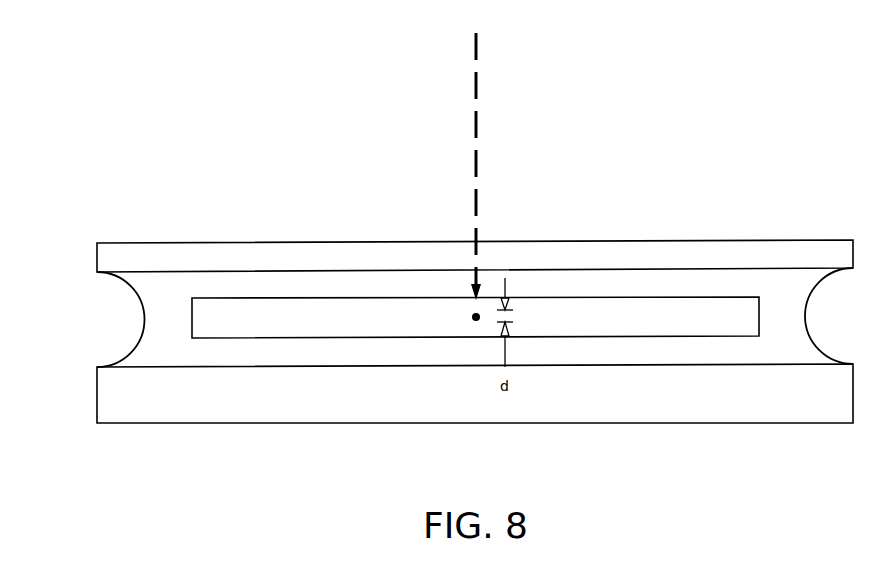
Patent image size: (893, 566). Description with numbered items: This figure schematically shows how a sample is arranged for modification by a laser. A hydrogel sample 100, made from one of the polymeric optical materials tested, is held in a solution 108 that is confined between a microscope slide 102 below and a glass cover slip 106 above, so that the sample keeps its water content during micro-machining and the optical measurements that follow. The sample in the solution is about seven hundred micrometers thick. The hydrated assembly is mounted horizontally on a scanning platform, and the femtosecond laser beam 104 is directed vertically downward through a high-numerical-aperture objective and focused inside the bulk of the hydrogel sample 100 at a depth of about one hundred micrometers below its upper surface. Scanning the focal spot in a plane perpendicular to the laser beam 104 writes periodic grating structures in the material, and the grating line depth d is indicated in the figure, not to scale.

The hydrogel sample 100 is at (297, 310).
The microscope slide 102 is at (300, 393).
The femtosecond laser beam 104 is at (476, 133).
The glass cover slip 106 is at (683, 255).
The solution 108 is at (148, 318).